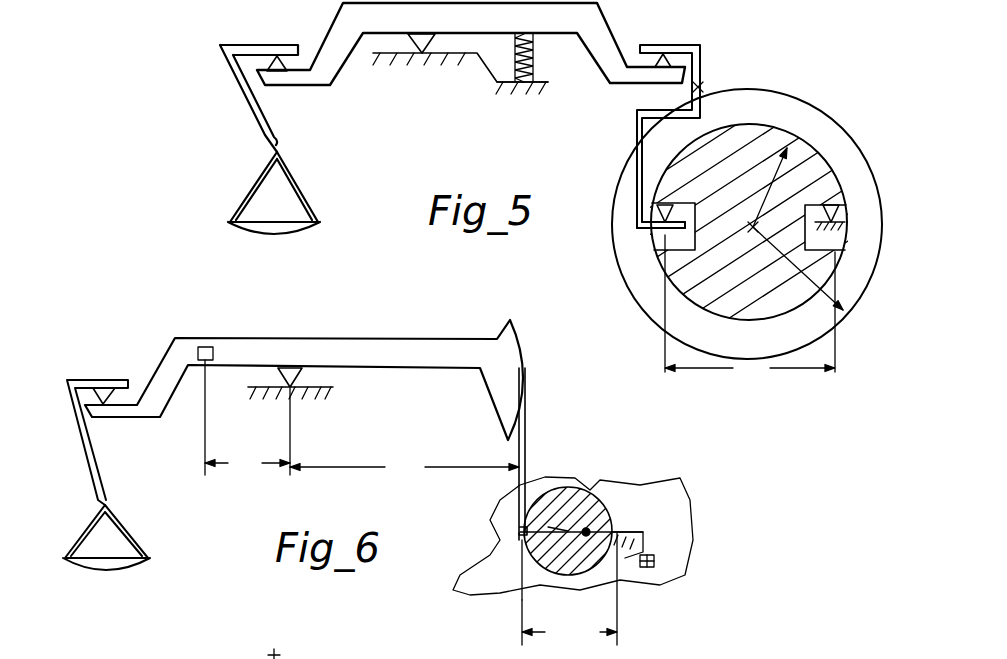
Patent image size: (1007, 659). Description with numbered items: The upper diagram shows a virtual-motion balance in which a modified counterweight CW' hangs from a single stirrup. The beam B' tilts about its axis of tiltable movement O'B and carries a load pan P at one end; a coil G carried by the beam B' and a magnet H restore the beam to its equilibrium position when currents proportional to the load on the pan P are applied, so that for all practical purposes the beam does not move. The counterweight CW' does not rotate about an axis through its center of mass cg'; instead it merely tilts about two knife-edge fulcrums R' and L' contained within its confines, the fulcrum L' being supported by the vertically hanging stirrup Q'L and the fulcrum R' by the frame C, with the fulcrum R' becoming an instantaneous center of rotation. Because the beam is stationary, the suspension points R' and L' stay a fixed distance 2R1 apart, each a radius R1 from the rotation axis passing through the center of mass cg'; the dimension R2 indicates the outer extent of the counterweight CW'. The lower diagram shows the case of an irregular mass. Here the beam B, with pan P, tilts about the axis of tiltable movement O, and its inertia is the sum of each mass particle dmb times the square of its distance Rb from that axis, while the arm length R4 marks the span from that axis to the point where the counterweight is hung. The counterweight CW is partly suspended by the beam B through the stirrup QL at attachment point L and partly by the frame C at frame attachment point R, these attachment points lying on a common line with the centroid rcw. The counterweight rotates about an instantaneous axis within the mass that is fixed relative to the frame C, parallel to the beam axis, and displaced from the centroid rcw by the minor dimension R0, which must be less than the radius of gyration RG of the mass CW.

In FIG. 5, the beam B' is at (471, 44).
In FIG. 5, the pan P is at (292, 218).
In FIG. 6, the pan P is at (120, 555).
In FIG. 5, the axis of tiltable movement O'B is at (460, 78).
In FIG. 5, the coil G is at (535, 63).
In FIG. 6, the coil G is at (572, 487).
In FIG. 5, the magnet H is at (530, 95).
In FIG. 5, the stirrup Q'L is at (630, 136).
In FIG. 5, the fulcrum L' is at (631, 210).
In FIG. 5, the modified counterweight CW' is at (770, 224).
In FIG. 5, the center of mass cg' is at (751, 209).
In FIG. 5, the fulcrum R' is at (865, 203).
In FIG. 6, the fulcrum R' is at (319, 653).
In FIG. 5, the frame C is at (846, 230).
In FIG. 6, the frame C is at (643, 547).
In FIG. 5, the radius R1 is at (775, 187).
In FIG. 6, the radius R1 is at (548, 527).
In FIG. 5, the outer radius R2 is at (790, 280).
In FIG. 5, the spacing of suspension points 2R1 is at (750, 318).
In FIG. 6, the beam B is at (304, 373).
In FIG. 6, the mass particle of the beam dmb is at (208, 347).
In FIG. 6, the distance from the fulcrum Rb is at (247, 468).
In FIG. 6, the axis of tiltable movement O is at (305, 421).
In FIG. 6, the load arm length R4 is at (404, 474).
In FIG. 6, the stirrup QL is at (528, 432).
In FIG. 6, the counterweight CW is at (593, 521).
In FIG. 6, the minor dimension R0 is at (588, 478).
In FIG. 6, the frame attachment point R is at (581, 509).
In FIG. 6, the radius of gyration RG is at (655, 560).
In FIG. 6, the beam attachment point L is at (499, 557).
In FIG. 6, the center of mass rcw is at (537, 578).